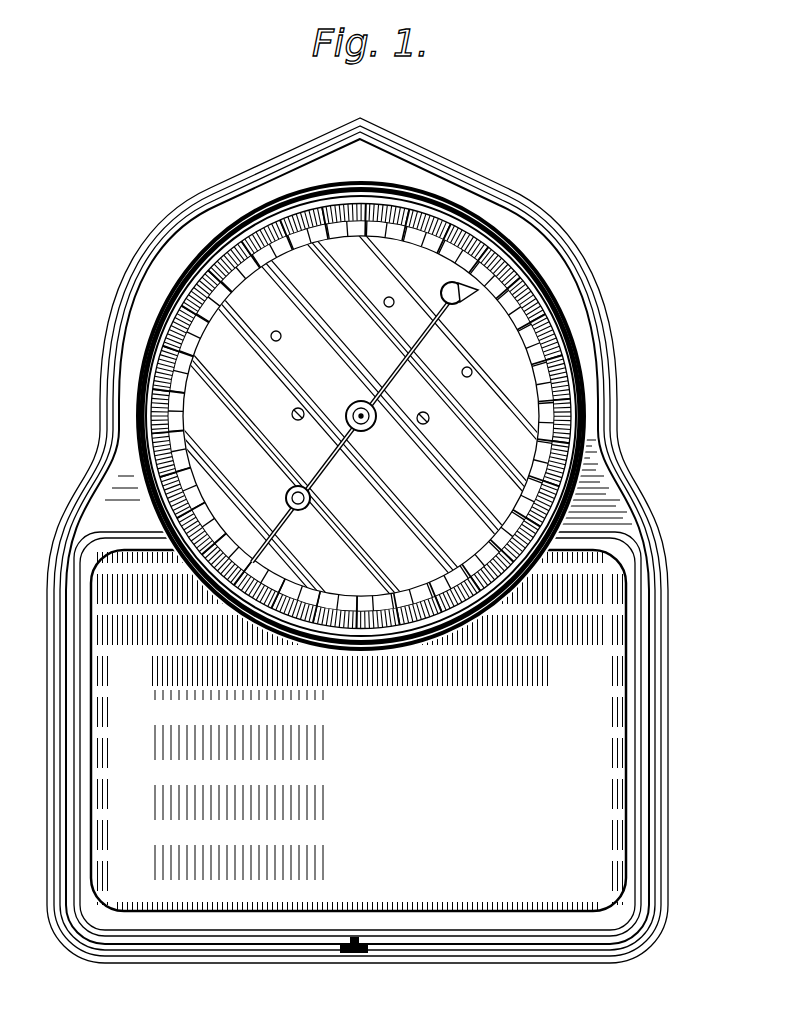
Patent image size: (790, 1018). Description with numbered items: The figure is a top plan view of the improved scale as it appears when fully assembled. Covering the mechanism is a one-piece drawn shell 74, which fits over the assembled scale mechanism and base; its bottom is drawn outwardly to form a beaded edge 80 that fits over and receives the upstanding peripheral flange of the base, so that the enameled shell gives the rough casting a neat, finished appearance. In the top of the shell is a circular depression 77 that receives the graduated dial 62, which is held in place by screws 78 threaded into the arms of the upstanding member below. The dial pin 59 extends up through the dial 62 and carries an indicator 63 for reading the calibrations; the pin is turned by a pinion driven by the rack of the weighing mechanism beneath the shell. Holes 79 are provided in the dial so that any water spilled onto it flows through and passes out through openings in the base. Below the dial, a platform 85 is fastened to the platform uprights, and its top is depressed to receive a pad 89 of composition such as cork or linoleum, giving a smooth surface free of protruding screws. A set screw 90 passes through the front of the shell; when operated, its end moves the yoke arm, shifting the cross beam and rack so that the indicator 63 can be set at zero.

The dial pin 59 is at (365, 420).
The graduated dial 62 is at (394, 280).
The indicator 63 is at (350, 402).
The one-piece drawn shell 74 is at (588, 502).
The circular depression 77 is at (557, 340).
The screws 78 is at (293, 411).
The holes 79 is at (281, 338).
The beaded edge 80 is at (374, 118).
The platform 85 is at (587, 843).
The pad 89 is at (585, 688).
The set screw 90 is at (343, 955).